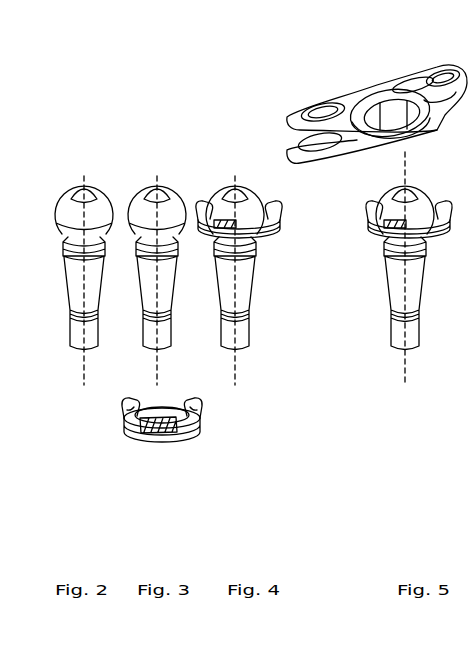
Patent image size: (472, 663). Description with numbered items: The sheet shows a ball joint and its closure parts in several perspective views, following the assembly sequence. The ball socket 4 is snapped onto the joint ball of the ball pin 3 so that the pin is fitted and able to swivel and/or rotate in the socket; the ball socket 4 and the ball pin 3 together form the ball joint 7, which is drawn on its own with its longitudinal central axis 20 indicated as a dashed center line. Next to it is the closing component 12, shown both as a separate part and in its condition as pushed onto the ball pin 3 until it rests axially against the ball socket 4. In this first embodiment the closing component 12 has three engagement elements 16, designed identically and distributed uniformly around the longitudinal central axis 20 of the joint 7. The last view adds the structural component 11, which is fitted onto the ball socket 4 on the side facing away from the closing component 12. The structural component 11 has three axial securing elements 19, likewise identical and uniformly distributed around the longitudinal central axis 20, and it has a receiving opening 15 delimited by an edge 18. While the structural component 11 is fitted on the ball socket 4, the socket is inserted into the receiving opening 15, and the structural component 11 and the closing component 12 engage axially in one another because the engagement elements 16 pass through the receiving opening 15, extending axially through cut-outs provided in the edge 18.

In FIG. 2, the ball pin 3 is at (63, 302).
In FIG. 3, the ball pin 3 is at (137, 302).
In FIG. 4, the ball pin 3 is at (222, 287).
In FIG. 5, the ball pin 3 is at (386, 305).
In FIG. 2, the ball socket 4 is at (67, 205).
In FIG. 3, the ball socket 4 is at (140, 205).
In FIG. 4, the ball socket 4 is at (223, 200).
In FIG. 5, the ball socket 4 is at (378, 225).
In FIG. 2, the ball joint 7 is at (105, 172).
In FIG. 5, the structural component 11 is at (352, 92).
In FIG. 3, the closing component 12 is at (168, 442).
In FIG. 4, the closing component 12 is at (268, 238).
In FIG. 5, the closing component 12 is at (440, 238).
In FIG. 5, the receiving opening 15 is at (390, 128).
In FIG. 3, the engagement elements 16 is at (140, 405).
In FIG. 5, the edge 18 is at (398, 83).
In FIG. 5, the axial securing elements 19 is at (380, 93).
In FIG. 2, the longitudinal central axis 20 is at (84, 372).
In FIG. 3, the longitudinal central axis 20 is at (157, 178).
In FIG. 4, the longitudinal central axis 20 is at (242, 375).
In FIG. 5, the longitudinal central axis 20 is at (414, 382).